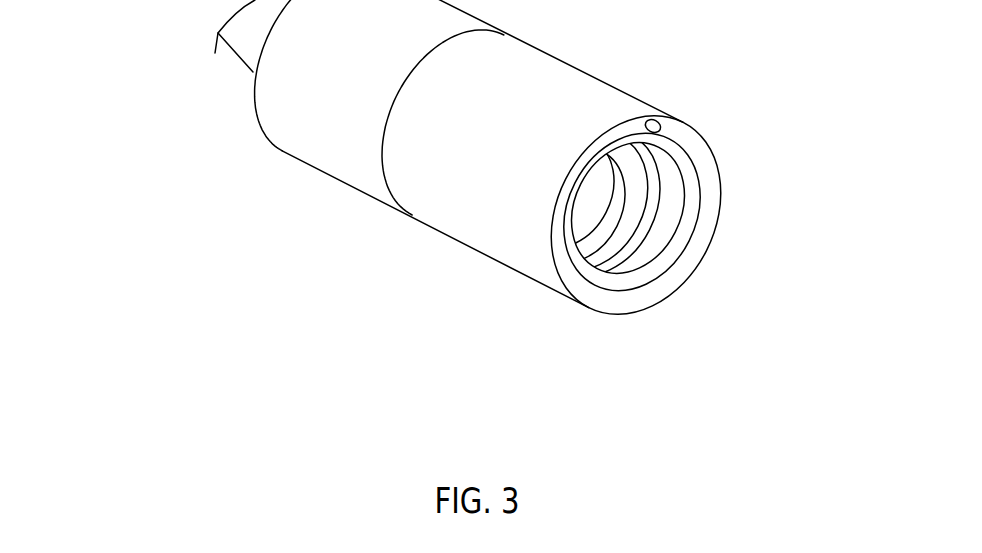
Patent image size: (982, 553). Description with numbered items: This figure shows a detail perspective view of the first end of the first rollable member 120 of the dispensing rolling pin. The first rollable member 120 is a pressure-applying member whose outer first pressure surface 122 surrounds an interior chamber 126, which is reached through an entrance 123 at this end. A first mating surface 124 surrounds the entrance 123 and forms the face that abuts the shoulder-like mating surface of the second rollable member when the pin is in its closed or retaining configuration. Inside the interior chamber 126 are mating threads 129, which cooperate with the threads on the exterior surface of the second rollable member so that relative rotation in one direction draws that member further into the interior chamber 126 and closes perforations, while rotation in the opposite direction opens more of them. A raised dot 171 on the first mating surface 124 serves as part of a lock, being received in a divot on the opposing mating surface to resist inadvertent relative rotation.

The first rollable member 120 is at (472, 195).
The first pressure surface 122 is at (341, 180).
The entrance 123 is at (673, 204).
The first mating surface 124 is at (698, 252).
The interior chamber 126 is at (647, 255).
The mating threads 129 is at (622, 255).
The raised dot 171 is at (660, 125).